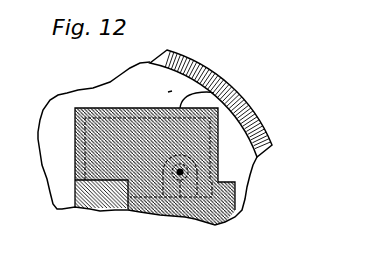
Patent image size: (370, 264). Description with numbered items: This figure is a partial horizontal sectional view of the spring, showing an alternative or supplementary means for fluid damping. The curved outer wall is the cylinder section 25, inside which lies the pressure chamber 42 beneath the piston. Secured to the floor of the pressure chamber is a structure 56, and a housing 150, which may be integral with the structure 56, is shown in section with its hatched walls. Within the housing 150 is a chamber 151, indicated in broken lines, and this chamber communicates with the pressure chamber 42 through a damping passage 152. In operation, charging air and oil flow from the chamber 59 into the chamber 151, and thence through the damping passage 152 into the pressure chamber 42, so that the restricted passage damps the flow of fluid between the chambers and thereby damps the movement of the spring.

The housing 150 is at (84, 137).
The chamber 151 is at (136, 134).
The damping passage 152 is at (212, 92).
The structure 56 is at (87, 204).
The chamber 59 is at (182, 212).
The pressure chamber 42 is at (170, 92).
The cylinder section 25 is at (262, 123).